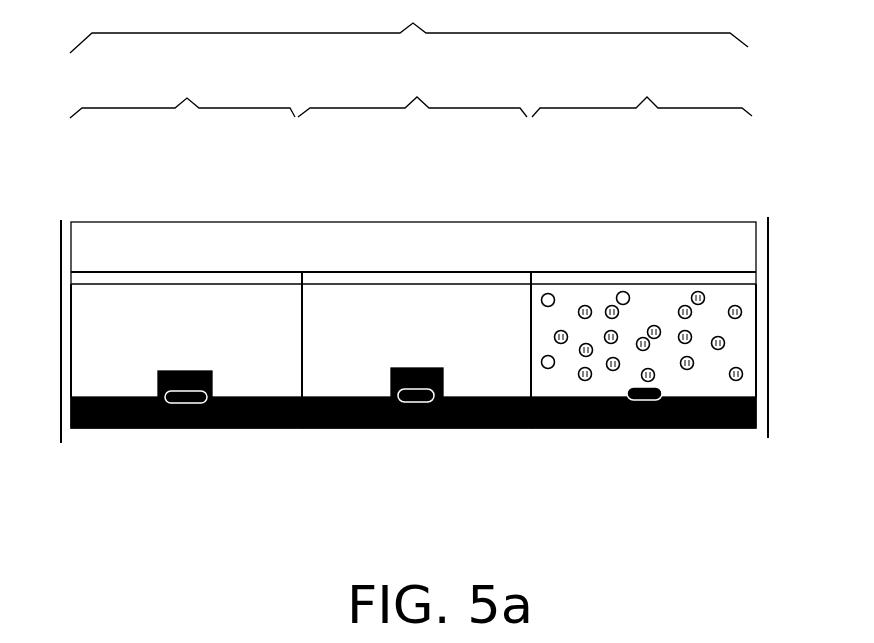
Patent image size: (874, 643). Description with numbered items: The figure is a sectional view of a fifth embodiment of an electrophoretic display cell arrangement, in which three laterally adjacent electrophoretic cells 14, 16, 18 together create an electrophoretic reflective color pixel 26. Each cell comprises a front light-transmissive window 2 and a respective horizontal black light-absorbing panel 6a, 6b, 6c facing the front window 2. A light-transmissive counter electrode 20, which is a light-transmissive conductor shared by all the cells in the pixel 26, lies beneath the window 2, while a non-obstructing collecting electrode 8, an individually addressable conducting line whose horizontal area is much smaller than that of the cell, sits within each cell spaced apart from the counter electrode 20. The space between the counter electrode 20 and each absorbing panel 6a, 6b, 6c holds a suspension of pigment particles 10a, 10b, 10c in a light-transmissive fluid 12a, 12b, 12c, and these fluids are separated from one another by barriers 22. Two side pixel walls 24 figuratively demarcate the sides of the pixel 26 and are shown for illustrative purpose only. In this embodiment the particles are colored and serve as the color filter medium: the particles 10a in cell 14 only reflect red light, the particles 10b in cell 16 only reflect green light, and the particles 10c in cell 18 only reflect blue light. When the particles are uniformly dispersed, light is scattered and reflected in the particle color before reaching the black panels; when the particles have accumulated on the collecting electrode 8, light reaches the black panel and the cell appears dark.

The front light-transmissive window 2 is at (728, 243).
The electrophoretic reflective color pixel 26 is at (409, 26).
The electrophoretic cell 14 is at (182, 93).
The electrophoretic cell 16 is at (412, 92).
The electrophoretic cell 18 is at (642, 92).
The light-transmissive counter electrode 20 is at (236, 275).
The barrier 22 is at (72, 370).
The side pixel wall 24 is at (61, 350).
The light-transmissive fluid 12a is at (118, 298).
The light-transmissive fluid 12b is at (342, 293).
The light-transmissive fluid 12c is at (563, 300).
The light-absorbing panel 6a is at (263, 407).
The light-absorbing panel 6b is at (480, 397).
The light-absorbing panel 6c is at (563, 397).
The pigment particles 10a is at (162, 400).
The pigment particles 10b is at (392, 383).
The pigment particles 10c is at (612, 370).
The collecting electrode 8 is at (191, 403).